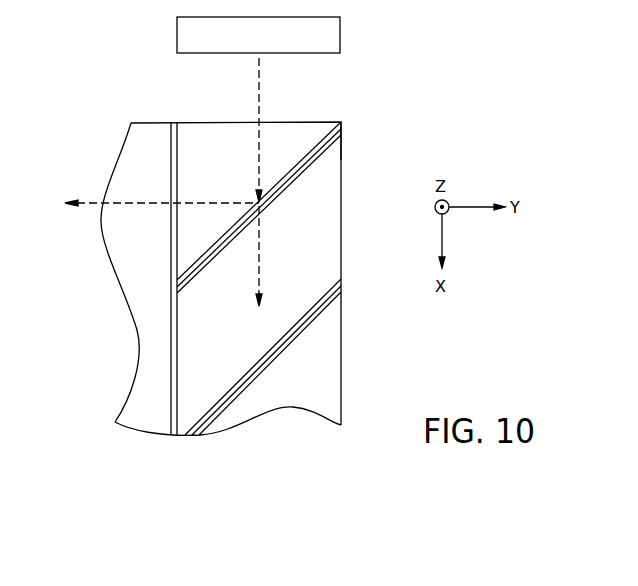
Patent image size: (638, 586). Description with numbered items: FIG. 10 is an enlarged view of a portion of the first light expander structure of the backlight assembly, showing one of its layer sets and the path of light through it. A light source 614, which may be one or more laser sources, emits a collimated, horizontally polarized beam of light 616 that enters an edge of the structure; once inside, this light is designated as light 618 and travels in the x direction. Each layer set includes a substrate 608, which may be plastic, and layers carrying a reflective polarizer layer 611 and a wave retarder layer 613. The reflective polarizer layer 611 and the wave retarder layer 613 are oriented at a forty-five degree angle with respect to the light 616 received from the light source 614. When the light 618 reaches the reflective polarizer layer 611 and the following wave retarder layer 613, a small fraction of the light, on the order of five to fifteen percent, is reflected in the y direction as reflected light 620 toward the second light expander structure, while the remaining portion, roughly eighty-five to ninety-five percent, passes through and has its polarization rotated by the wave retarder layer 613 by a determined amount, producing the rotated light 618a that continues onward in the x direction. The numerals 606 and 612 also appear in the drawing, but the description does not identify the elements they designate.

The reflective coating layers 606 is at (166, 279).
The substrate 608 is at (315, 203).
The reflective polarizer layer 611 is at (326, 124).
The first region of optical element 612 is at (140, 147).
The wave retarder layer 613 is at (332, 148).
The light source 614 is at (341, 35).
The light 616 is at (260, 91).
The light 618 is at (258, 145).
The rotated light 618a is at (258, 250).
The reflected light 620 is at (125, 203).